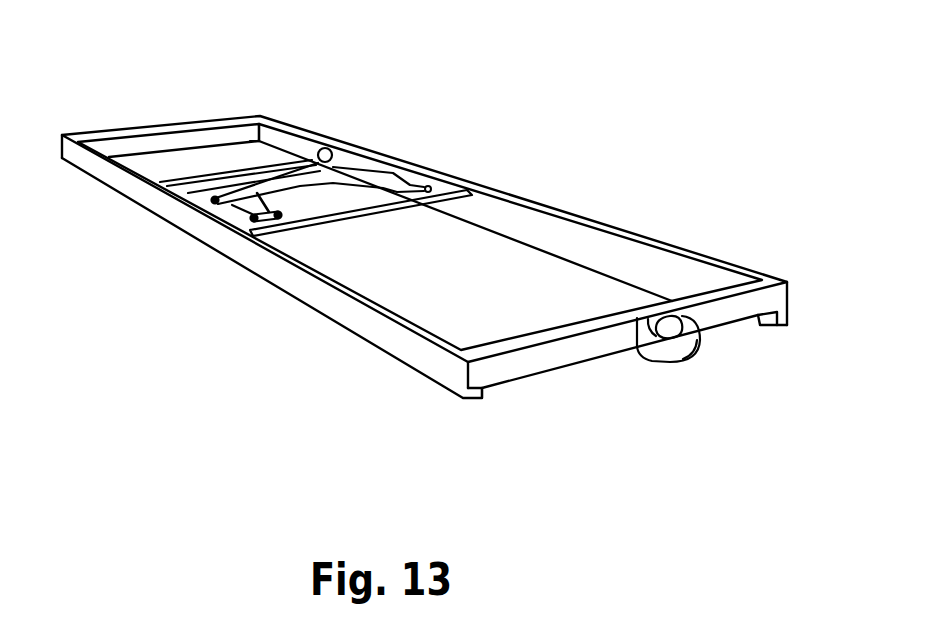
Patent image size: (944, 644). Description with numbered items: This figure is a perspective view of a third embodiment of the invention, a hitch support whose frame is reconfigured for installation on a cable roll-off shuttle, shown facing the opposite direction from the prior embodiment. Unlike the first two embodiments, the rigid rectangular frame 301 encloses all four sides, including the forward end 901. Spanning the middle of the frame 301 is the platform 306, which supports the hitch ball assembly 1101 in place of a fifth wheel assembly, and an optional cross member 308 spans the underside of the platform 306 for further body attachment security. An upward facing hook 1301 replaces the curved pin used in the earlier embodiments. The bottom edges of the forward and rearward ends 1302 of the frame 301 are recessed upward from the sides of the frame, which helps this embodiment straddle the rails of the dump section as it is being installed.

The frame 301 is at (540, 232).
The platform 306 is at (303, 207).
The cross member 308 is at (260, 166).
The forward end 901 is at (657, 419).
The hitch ball assembly 1101 is at (357, 175).
The upward facing hook 1301 is at (663, 330).
The forward and rearward ends 1302 is at (463, 398).